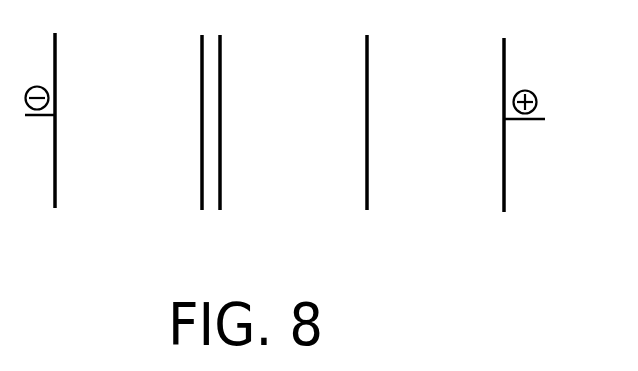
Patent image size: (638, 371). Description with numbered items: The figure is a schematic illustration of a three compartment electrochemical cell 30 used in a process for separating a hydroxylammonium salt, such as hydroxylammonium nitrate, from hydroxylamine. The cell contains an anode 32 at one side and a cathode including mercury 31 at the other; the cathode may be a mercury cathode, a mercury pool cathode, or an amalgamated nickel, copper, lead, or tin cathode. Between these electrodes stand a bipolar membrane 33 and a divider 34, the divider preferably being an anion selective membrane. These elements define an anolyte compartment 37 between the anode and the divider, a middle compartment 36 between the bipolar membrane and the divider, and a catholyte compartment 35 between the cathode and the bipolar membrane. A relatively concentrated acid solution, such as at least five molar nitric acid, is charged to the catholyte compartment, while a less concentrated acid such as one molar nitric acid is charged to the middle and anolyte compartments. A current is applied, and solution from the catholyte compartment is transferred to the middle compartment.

The three compartment electrochemical cell 30 is at (575, 158).
The cathode including mercury 31 is at (44, 107).
The anode 32 is at (517, 111).
The bipolar membrane 33 is at (207, 126).
The divider 34 is at (367, 126).
The catholyte compartment 35 is at (133, 196).
The middle compartment 36 is at (296, 196).
The anolyte compartment 37 is at (442, 196).